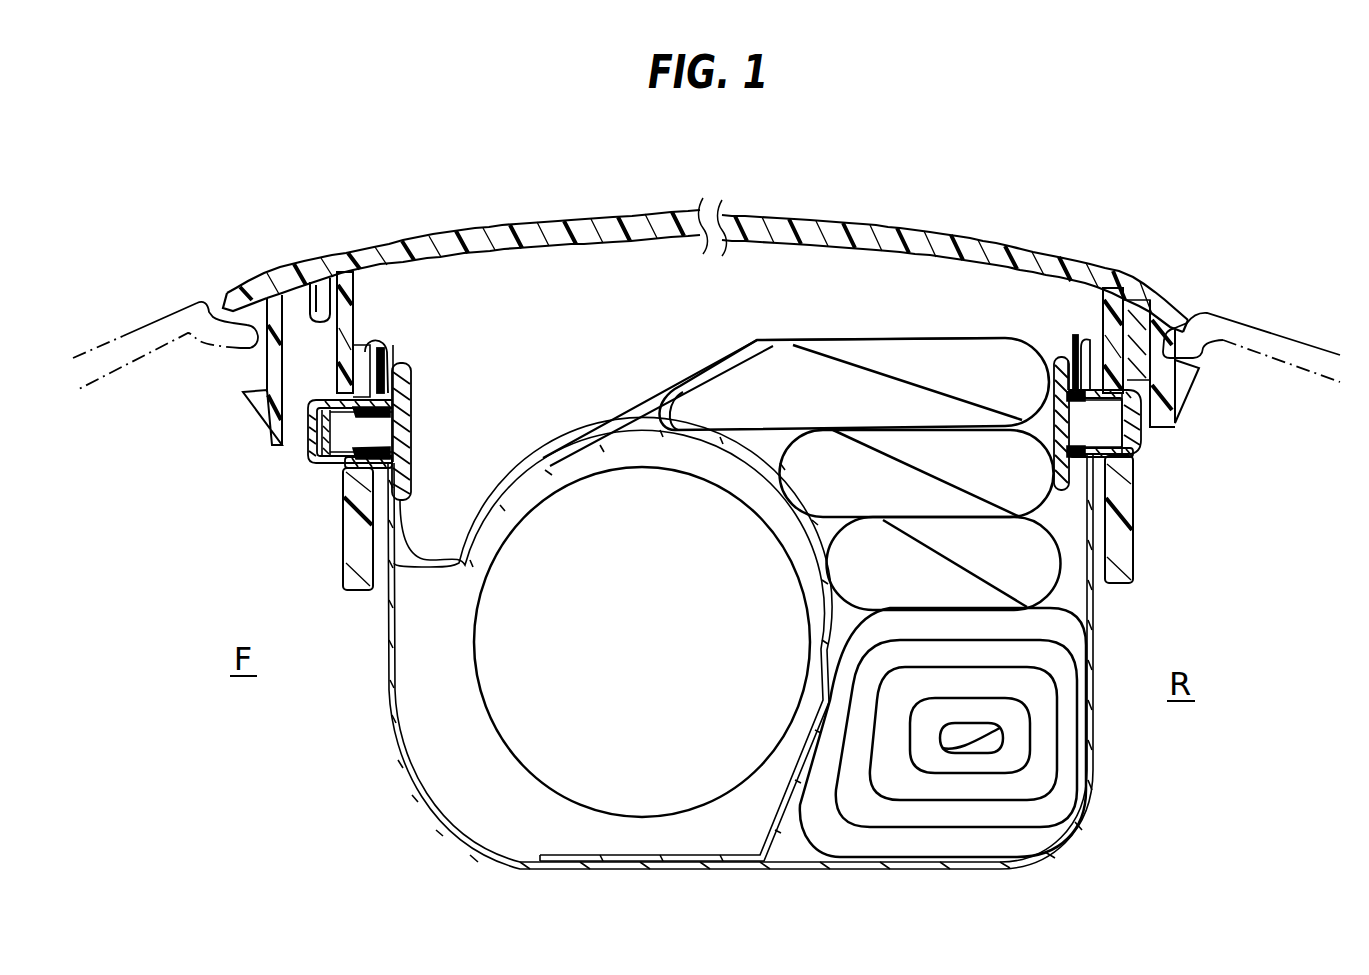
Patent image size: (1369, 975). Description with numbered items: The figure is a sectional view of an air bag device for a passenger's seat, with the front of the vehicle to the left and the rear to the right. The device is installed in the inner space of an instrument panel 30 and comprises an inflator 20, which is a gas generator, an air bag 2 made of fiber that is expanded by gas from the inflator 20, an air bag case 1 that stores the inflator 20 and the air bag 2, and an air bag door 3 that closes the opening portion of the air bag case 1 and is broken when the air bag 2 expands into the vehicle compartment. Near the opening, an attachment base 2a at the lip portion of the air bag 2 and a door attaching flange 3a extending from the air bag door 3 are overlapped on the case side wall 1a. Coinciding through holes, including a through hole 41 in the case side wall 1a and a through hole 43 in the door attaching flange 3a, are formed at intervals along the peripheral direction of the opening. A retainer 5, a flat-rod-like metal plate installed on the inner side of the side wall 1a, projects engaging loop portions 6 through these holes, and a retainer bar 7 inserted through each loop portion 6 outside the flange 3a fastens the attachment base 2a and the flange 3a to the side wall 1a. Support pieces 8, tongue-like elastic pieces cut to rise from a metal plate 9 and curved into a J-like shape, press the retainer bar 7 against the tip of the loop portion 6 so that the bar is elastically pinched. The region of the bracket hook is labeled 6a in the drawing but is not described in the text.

The air bag case 1 is at (1093, 634).
The case side wall 1a is at (378, 382).
The air bag 2 is at (913, 385).
The attachment base 2a is at (387, 353).
The air bag door 3 is at (870, 232).
The door attaching flange 3a is at (353, 303).
The retainer 5 is at (412, 387).
The engaging loop portion 6 is at (300, 384).
The bracket hook 6a is at (308, 440).
The retainer bar 7 is at (1142, 436).
The support piece for retainer bar 8 is at (310, 462).
The plate 9 is at (412, 433).
The inflator 20 is at (520, 726).
The instrument panel 30 is at (1260, 328).
The through hole 41 is at (347, 512).
The through hole 43 is at (347, 468).